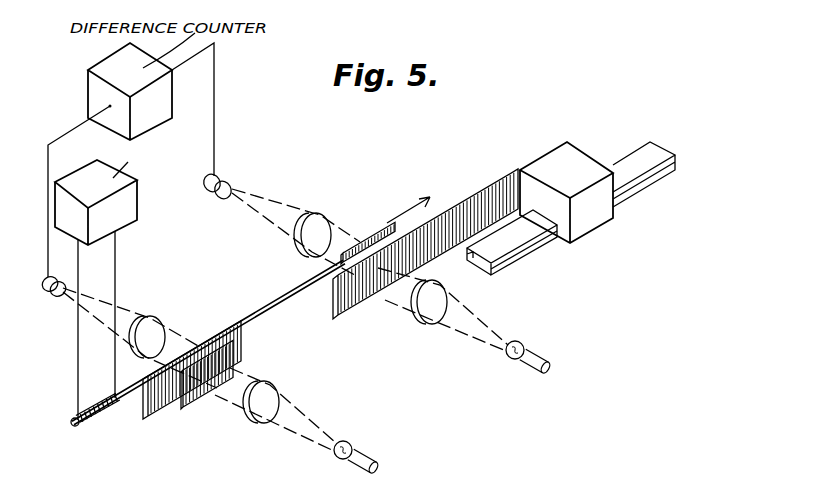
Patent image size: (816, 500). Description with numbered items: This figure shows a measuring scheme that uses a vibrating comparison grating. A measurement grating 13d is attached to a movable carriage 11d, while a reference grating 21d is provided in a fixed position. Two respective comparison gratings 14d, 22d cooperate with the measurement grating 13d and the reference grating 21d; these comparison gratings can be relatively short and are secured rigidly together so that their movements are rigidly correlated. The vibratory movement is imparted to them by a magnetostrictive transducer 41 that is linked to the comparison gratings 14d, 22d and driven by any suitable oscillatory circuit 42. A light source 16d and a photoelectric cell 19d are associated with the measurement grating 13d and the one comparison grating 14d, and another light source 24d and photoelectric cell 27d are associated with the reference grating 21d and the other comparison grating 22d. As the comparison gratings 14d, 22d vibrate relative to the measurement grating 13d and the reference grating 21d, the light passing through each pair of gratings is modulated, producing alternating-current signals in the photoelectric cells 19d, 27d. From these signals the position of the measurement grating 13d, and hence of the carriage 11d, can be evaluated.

The carriage 11d is at (587, 227).
The measurement grating 13d is at (476, 195).
The comparison grating 14d is at (376, 241).
The light source 16d is at (522, 345).
The photoelectric cell 19d is at (231, 184).
The reference grating 21d is at (197, 402).
The comparison grating 22d is at (218, 335).
The light source 24d is at (361, 439).
The photoelectric cell 27d is at (58, 293).
The magnetostrictive transducer 41 is at (80, 425).
The oscillatory circuit 42 is at (122, 222).